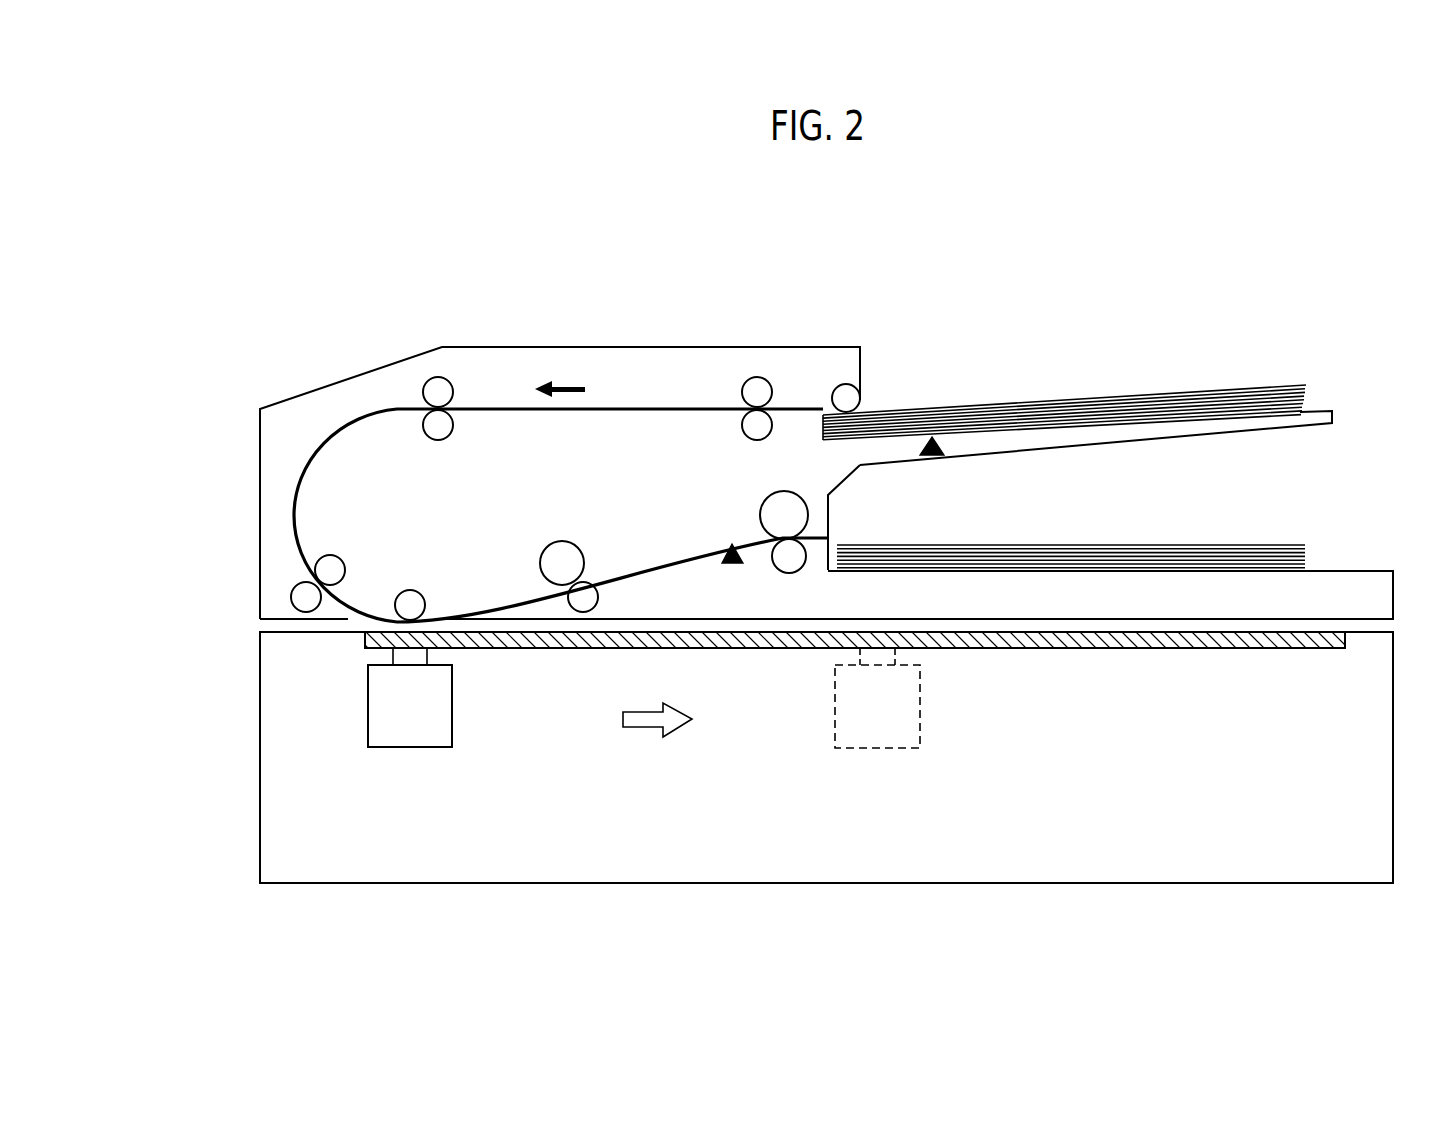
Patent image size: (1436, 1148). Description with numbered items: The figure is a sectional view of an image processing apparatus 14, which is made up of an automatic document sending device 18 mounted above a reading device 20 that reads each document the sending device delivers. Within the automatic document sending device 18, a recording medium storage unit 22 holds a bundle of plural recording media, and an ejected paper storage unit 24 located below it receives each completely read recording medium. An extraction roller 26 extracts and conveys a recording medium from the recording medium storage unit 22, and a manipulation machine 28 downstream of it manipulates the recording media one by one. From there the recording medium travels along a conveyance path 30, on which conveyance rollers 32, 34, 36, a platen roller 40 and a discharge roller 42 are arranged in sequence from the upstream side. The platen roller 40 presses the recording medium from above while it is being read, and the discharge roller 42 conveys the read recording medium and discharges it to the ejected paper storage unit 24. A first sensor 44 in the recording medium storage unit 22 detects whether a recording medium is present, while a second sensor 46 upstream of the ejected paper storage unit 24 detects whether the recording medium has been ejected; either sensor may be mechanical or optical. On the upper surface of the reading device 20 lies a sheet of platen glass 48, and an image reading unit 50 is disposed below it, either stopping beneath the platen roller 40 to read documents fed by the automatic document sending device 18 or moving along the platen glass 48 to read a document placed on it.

The image processing apparatus 14 is at (1250, 340).
The automatic document sending device 18 is at (260, 518).
The reading device 20 is at (260, 716).
The recording medium storage unit 22 is at (1165, 441).
The ejected paper storage unit 24 is at (1360, 571).
The extraction roller 26 is at (860, 398).
The manipulation machine 28 is at (755, 385).
The conveyance path 30 is at (660, 406).
The conveyance roller 32 is at (437, 385).
The conveyance roller 34 is at (331, 566).
The conveyance roller 36 is at (549, 547).
The platen roller 40 is at (411, 597).
The discharge roller 42 is at (800, 572).
The first sensor 44 is at (936, 440).
The second sensor 46 is at (726, 559).
The platen glass 48 is at (1025, 649).
The image reading unit 50 is at (452, 717).